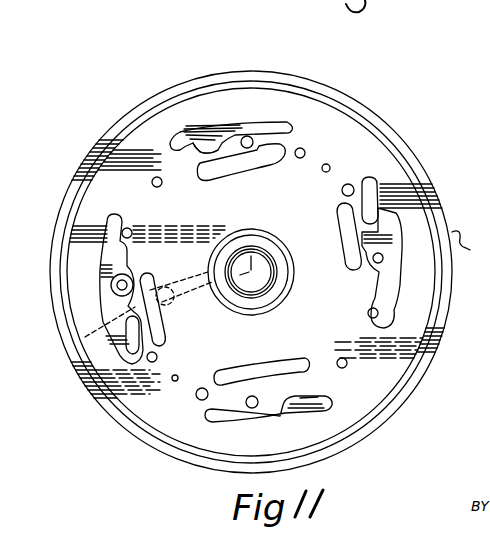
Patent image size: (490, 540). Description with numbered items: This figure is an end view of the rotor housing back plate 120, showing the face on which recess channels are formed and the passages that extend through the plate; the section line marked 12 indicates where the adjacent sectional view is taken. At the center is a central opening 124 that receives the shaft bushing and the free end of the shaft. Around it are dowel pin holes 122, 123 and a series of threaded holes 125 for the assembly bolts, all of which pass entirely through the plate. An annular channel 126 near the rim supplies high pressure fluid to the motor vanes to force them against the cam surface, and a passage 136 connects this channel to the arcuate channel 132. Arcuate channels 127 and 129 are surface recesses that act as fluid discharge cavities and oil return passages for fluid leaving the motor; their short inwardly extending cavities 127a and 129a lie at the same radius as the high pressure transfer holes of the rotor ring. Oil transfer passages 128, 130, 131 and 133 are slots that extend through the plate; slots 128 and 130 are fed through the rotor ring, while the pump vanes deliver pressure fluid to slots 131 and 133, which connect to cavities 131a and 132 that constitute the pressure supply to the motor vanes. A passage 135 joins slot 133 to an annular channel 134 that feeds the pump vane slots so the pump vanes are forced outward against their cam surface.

The section line 12- 12 is at (269, 54).
The rotor housing back plate 120 is at (471, 245).
The dowel pin hole 122 is at (328, 164).
The dowel pin hole 123 is at (172, 381).
The central opening 124 is at (263, 268).
The threaded holes 125 is at (246, 149).
The annular channel 126 is at (379, 140).
The arcuate channel 127 is at (233, 121).
The short inwardly extending cavity 127a is at (200, 149).
The oil transfer passage 128 is at (267, 165).
The arcuate channel 129 is at (285, 423).
The short inwardly extending cavity 129a is at (300, 398).
The oil transfer passage 130 is at (340, 345).
The oil transfer passage 131 is at (337, 226).
The cavity 131a is at (386, 223).
The arcuate channel 132 is at (106, 258).
The oil transfer passage 133 is at (148, 274).
The annular channel 134 is at (141, 316).
The passage 135 is at (196, 288).
The passage 136 is at (85, 337).